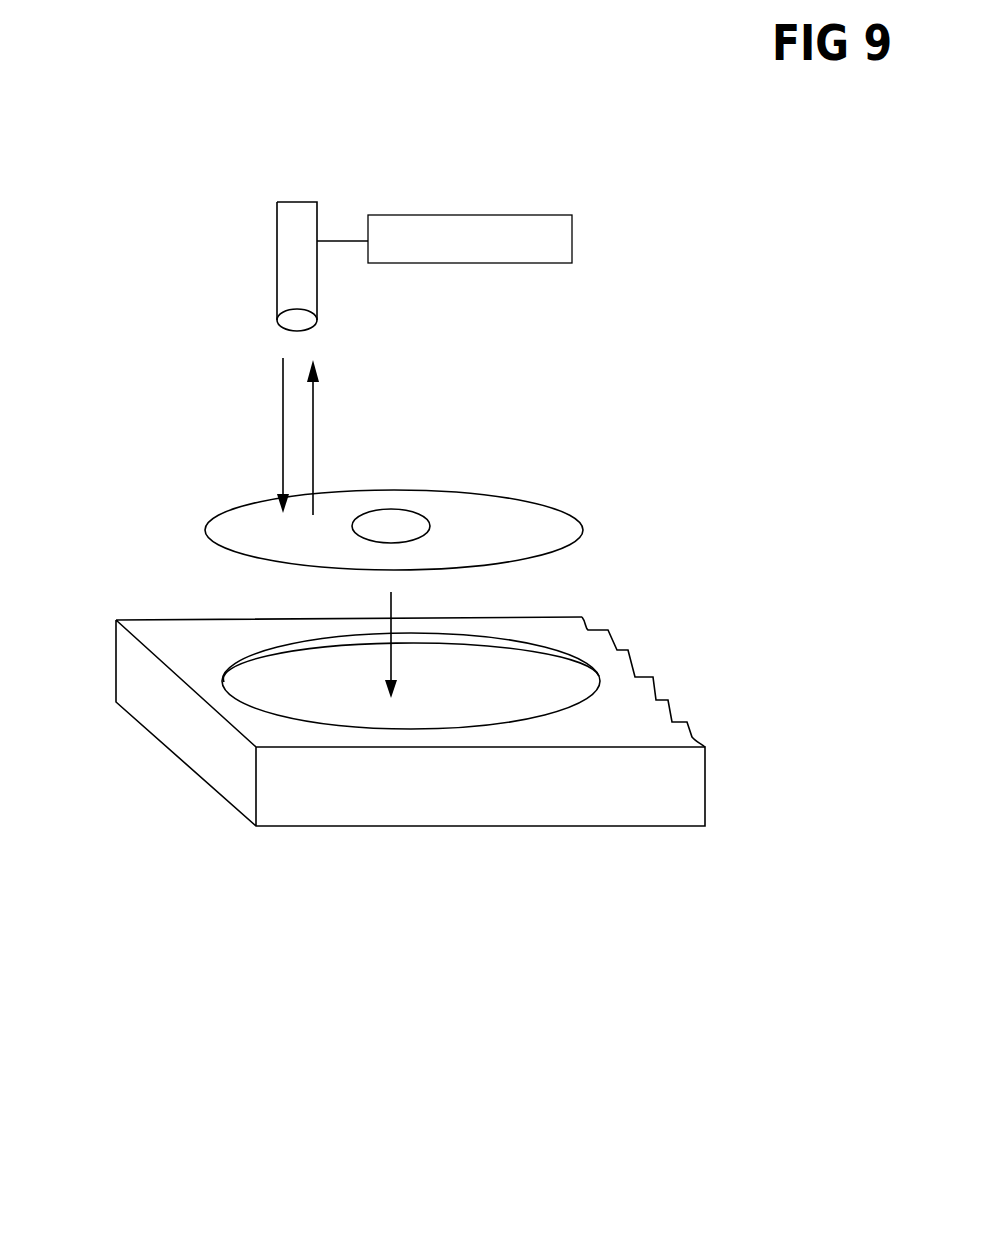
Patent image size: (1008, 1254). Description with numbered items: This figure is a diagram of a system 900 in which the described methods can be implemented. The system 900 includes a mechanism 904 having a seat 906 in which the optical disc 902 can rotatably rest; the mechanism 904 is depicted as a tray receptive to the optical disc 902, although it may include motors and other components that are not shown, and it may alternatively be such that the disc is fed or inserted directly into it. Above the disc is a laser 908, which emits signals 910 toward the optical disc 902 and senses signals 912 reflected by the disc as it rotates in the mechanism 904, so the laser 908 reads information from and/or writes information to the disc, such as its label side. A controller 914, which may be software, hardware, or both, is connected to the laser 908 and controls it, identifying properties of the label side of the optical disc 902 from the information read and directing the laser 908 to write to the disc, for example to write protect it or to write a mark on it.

The system 900 is at (409, 950).
The optical disc 902 is at (584, 522).
The mechanism 904 is at (118, 687).
The seat 906 is at (535, 691).
The laser 908 is at (277, 284).
The signals 910 is at (281, 440).
The signals reflected by the optical disc 912 is at (314, 426).
The controller 914 is at (537, 264).